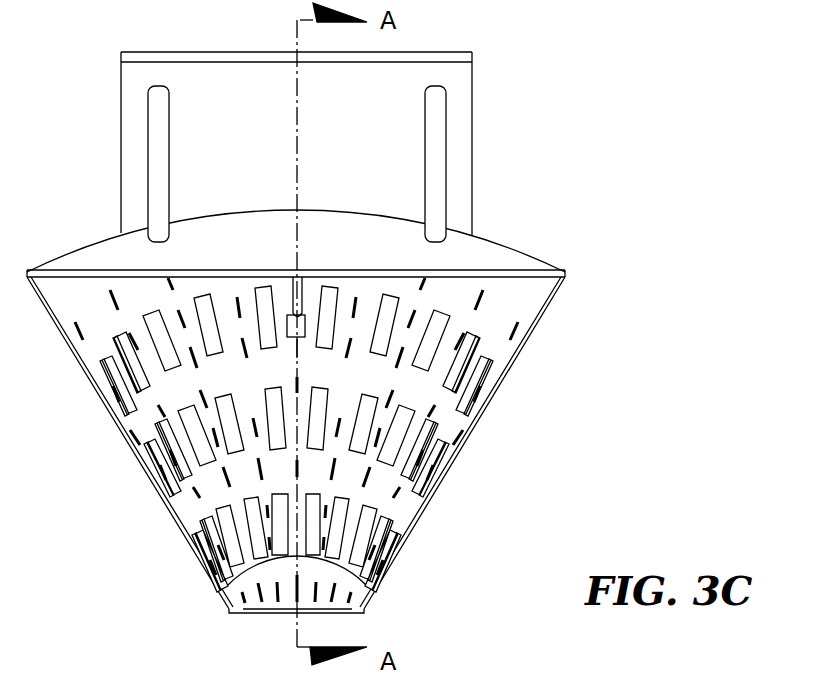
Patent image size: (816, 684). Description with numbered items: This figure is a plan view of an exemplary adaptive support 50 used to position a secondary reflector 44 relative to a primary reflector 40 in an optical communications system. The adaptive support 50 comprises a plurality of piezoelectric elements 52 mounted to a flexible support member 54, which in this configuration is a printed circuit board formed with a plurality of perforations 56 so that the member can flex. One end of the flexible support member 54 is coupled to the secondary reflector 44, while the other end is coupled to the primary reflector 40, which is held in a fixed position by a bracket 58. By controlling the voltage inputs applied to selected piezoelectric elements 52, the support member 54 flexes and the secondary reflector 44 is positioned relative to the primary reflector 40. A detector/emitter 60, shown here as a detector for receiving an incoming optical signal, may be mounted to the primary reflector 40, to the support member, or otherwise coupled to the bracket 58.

The primary reflector 40 is at (296, 162).
The secondary reflector 44 is at (313, 612).
The adaptive support 50 is at (348, 393).
The piezoelectric elements 52 is at (473, 388).
The flexible support member 54 is at (532, 307).
The perforations 56 is at (475, 310).
The bracket 58 is at (440, 128).
The detector/emitter 60 is at (272, 292).